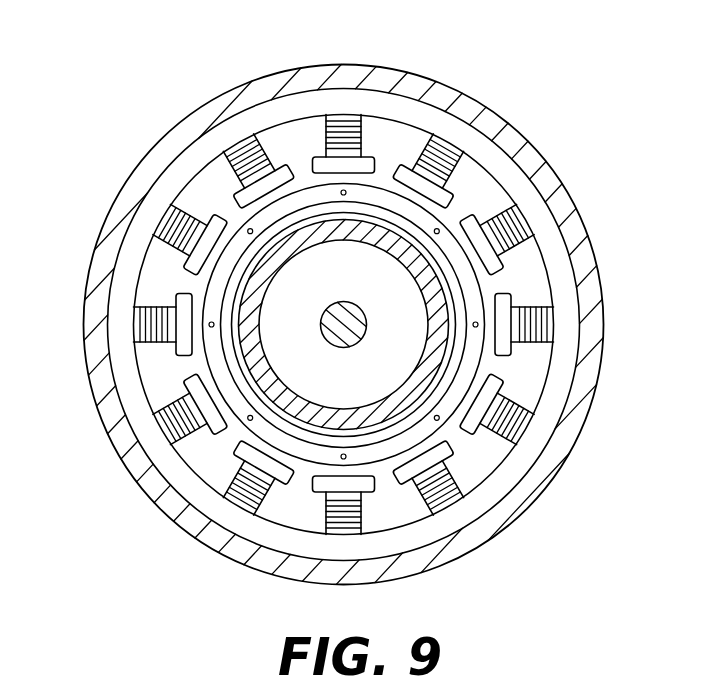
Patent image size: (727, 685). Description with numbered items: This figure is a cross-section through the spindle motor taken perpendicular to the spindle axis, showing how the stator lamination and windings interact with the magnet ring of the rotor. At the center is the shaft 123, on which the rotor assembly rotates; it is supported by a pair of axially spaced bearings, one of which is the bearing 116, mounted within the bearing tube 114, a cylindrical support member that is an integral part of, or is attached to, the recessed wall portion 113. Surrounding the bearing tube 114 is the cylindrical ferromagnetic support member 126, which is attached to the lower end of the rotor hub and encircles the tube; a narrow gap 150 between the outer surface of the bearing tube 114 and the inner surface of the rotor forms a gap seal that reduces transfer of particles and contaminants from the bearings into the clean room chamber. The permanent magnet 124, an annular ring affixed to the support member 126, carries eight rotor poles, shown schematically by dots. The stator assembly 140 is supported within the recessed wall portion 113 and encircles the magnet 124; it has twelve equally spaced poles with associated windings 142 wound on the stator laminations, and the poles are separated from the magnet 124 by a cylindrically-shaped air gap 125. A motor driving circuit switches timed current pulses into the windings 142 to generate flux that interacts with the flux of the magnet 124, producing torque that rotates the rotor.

The recessed wall portion 113 is at (152, 508).
The stator assembly 140 is at (428, 102).
The air gap 125 is at (302, 176).
The windings 142 is at (533, 310).
The permanent magnet 124 is at (247, 229).
The cylindrical ferromagnetic support member 126 is at (232, 278).
The gap 150 is at (240, 348).
The bearing tube 114 is at (291, 256).
The bearing 116 is at (312, 329).
The shaft 123 is at (355, 348).